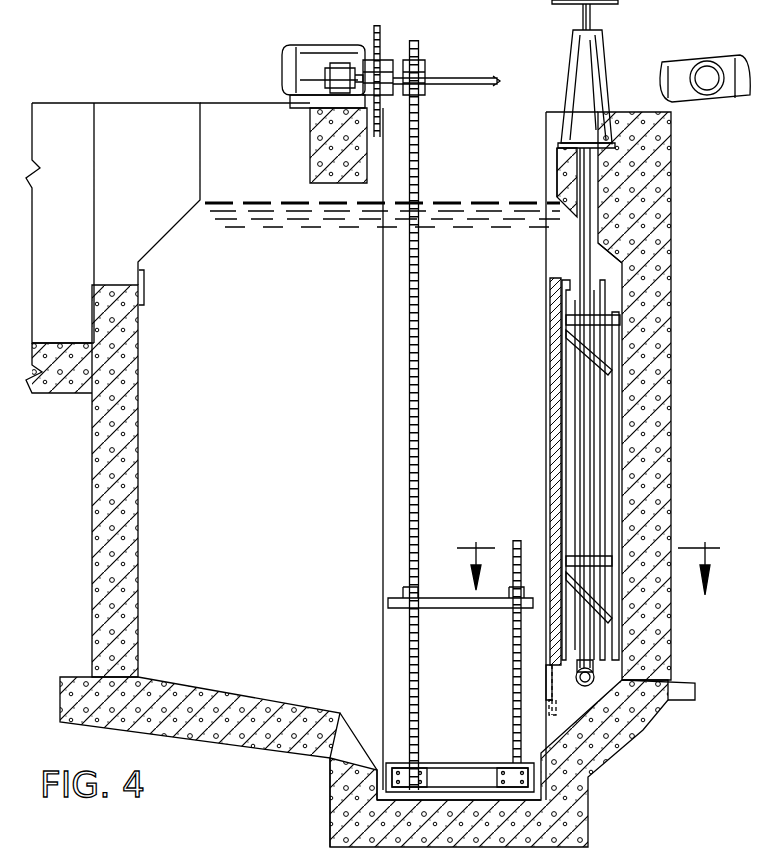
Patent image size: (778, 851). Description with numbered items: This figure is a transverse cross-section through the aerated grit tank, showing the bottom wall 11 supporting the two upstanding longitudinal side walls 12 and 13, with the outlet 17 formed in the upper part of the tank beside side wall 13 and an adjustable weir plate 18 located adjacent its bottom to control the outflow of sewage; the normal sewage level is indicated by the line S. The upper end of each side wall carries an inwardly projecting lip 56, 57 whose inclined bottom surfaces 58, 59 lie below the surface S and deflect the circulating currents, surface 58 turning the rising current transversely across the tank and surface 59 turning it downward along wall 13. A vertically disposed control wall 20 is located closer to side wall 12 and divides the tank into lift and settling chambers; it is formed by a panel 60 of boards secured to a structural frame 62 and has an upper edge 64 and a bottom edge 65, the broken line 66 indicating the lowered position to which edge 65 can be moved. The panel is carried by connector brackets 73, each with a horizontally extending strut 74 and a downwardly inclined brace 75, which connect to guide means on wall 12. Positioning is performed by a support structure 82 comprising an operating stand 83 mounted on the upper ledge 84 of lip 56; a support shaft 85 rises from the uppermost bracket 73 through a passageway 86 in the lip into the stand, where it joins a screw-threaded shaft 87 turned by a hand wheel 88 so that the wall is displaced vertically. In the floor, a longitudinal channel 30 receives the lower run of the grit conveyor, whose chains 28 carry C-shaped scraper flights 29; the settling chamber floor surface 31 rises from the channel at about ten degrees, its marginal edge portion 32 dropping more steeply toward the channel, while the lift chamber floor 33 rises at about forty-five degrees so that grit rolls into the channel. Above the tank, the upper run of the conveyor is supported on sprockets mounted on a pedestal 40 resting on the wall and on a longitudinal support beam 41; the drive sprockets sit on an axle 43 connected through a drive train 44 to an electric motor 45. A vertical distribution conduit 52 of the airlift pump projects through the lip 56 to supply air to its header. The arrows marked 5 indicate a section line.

The section line 5- 5 is at (590, 568).
The bottom wall 11 is at (240, 748).
The side wall 12 is at (672, 165).
The side wall 13 is at (90, 467).
The outlet 17 is at (107, 215).
The weir plate 18 is at (145, 276).
The control wall 20 is at (588, 461).
The chains 28 is at (340, 776).
The scraper flights 29 is at (483, 612).
The channel 30 is at (400, 803).
The floor surface 31 is at (207, 685).
The marginal edge portion 32 is at (352, 715).
The bottom wall surface 33 is at (622, 738).
The pedestal 40 is at (330, 112).
The support beam 41 is at (310, 156).
The axle 43 is at (488, 76).
The drive train 44 is at (378, 40).
The electric motor 45 is at (305, 50).
The vertical distribution conduit 52 is at (598, 650).
The inwardly projecting lip 56 is at (557, 155).
The inwardly projecting lip 57 is at (205, 147).
The inclined bottom surface 58 is at (545, 232).
The inclined bottom surface 59 is at (178, 203).
The panel 60 is at (548, 408).
The structural frame 62 is at (552, 458).
The upper longitudinally extending edge 64 is at (550, 473).
The bottom longitudinally extending edge 65 is at (545, 672).
The broken line 66 is at (548, 696).
The connector brackets 73 is at (608, 323).
The horizontally extending strut 74 is at (544, 475).
The downwardly inclined brace 75 is at (530, 475).
The support structures 82 is at (614, 45).
The operating stand 83 is at (604, 60).
The upper ledge 84 is at (560, 140).
The support shaft 85 is at (600, 262).
The passageway 86 is at (585, 172).
The screw-threaded shaft 87 is at (592, 17).
The operating hand wheel 88 is at (552, 2).
The sewage surface S is at (268, 185).